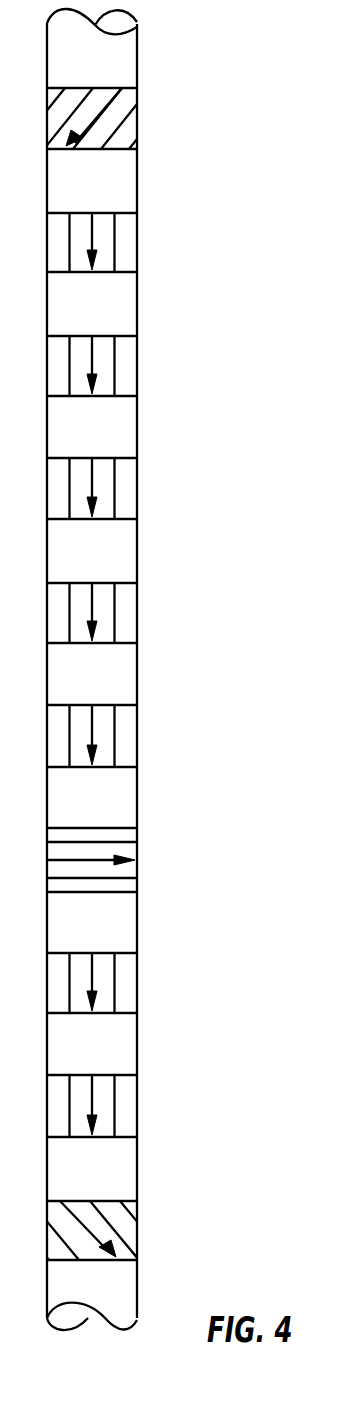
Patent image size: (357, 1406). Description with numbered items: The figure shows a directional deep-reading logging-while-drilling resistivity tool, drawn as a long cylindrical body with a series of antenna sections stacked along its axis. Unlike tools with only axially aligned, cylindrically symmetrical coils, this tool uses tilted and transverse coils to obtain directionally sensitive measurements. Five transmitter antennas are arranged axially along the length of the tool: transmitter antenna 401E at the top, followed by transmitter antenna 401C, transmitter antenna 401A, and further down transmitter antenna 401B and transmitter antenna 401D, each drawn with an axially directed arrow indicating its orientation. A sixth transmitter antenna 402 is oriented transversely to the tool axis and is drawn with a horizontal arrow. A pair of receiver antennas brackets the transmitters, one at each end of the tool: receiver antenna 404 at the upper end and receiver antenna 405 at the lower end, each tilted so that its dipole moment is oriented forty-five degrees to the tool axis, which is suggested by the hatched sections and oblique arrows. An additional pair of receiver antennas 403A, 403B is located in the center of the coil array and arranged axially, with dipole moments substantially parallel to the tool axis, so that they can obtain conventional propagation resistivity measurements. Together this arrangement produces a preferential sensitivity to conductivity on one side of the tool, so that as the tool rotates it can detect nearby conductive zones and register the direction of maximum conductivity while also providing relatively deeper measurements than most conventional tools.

The receiver antenna 404 is at (137, 118).
The transmitter antenna 401E is at (137, 242).
The transmitter antenna 401C is at (137, 366).
The transmitter antenna 401A is at (137, 488).
The receiver antenna 403A is at (137, 613).
The receiver antenna 403B is at (137, 736).
The sixth transmitter antenna 402 is at (135, 860).
The transmitter antenna 401B is at (137, 983).
The transmitter antenna 401D is at (137, 1106).
The receiver antenna 405 is at (137, 1231).